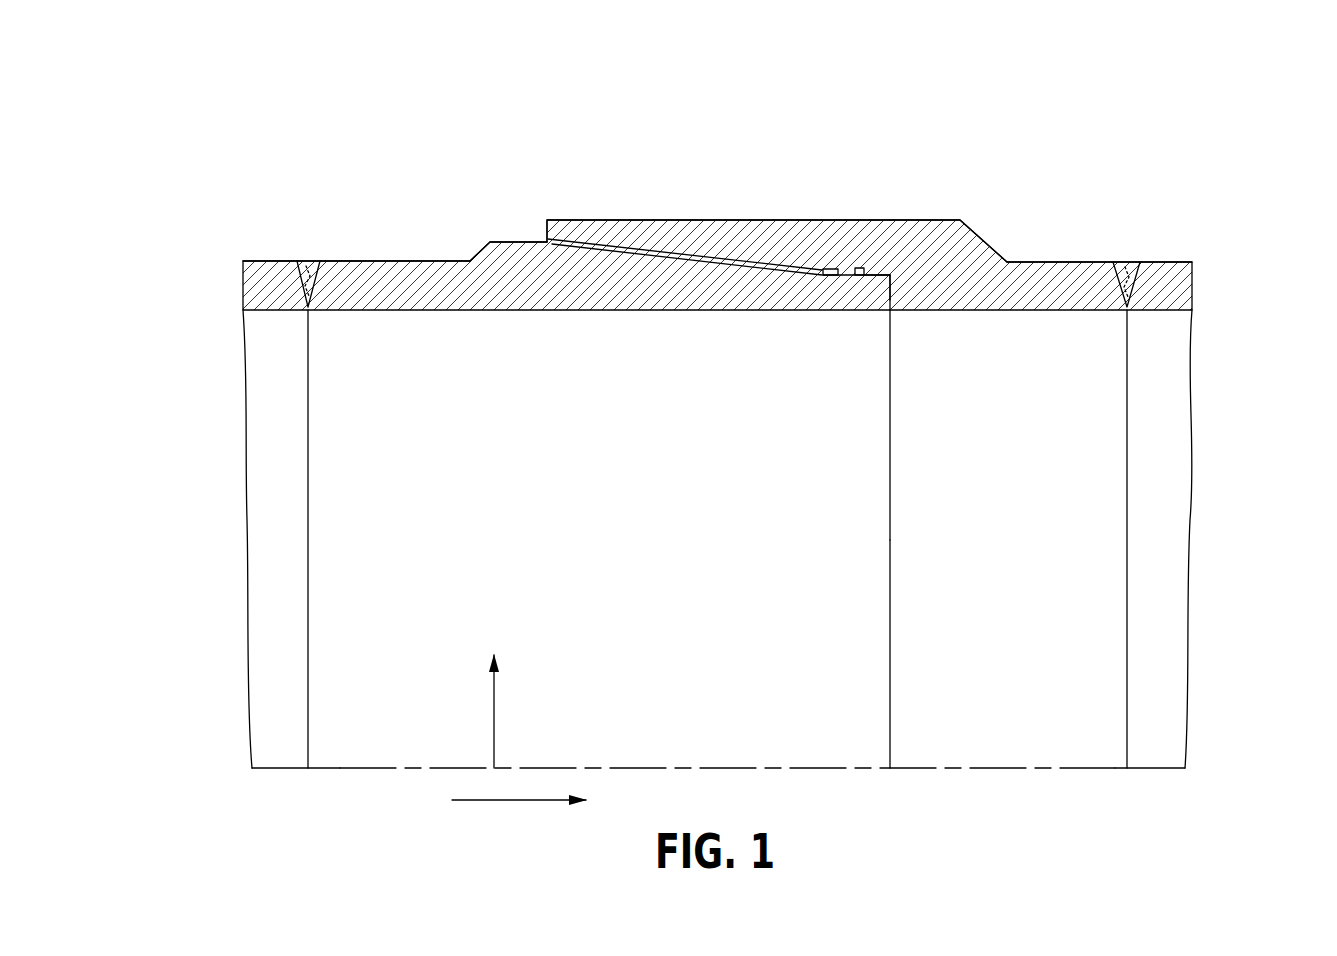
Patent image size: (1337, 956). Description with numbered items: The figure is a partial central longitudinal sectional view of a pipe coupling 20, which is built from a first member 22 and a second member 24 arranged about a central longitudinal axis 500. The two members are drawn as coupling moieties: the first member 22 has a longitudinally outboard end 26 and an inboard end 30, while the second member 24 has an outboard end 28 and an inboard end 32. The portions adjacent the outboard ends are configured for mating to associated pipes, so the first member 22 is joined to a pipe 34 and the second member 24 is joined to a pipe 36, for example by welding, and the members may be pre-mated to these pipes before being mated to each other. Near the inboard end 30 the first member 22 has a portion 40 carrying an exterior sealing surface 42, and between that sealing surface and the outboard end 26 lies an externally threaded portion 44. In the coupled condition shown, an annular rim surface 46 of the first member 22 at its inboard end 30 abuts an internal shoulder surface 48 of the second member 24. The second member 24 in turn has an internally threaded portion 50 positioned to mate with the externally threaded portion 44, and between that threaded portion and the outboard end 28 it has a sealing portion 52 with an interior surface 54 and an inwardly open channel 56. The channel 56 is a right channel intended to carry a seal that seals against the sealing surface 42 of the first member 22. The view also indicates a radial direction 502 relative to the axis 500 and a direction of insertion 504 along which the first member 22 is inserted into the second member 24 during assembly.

The pipe coupling 20 is at (728, 186).
The first member 22 is at (384, 236).
The second member 24 is at (1032, 206).
The outboard end of first member 26 is at (296, 440).
The outboard end of second member 28 is at (1134, 385).
The inboard end of first member 30 is at (904, 455).
The inboard end of second member 32 is at (539, 231).
The pipe 34 is at (270, 288).
The pipe 36 is at (1173, 282).
The portion of first member 40 is at (840, 303).
The exterior sealing surface 42 is at (878, 272).
The externally threaded portion 44 is at (695, 268).
The annular rim surface 46 is at (890, 400).
The internal shoulder surface 48 is at (890, 292).
The internally threaded portion 50 is at (769, 243).
The sealing portion 52 is at (871, 240).
The interior surface 54 is at (847, 277).
The inwardly open channel 56 is at (858, 277).
The central longitudinal axis 500 is at (850, 770).
The radial direction 502 is at (494, 720).
The direction of insertion 504 is at (502, 802).